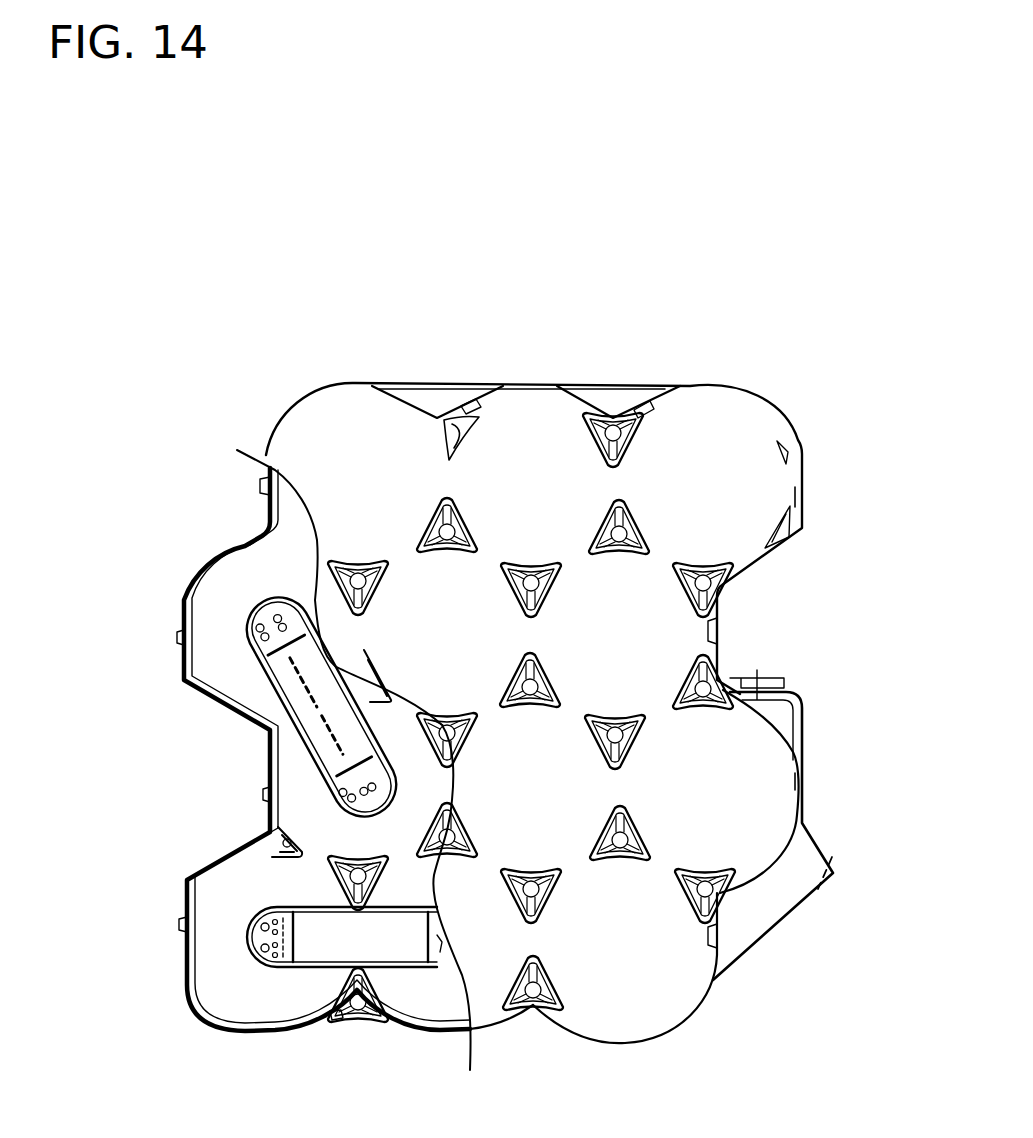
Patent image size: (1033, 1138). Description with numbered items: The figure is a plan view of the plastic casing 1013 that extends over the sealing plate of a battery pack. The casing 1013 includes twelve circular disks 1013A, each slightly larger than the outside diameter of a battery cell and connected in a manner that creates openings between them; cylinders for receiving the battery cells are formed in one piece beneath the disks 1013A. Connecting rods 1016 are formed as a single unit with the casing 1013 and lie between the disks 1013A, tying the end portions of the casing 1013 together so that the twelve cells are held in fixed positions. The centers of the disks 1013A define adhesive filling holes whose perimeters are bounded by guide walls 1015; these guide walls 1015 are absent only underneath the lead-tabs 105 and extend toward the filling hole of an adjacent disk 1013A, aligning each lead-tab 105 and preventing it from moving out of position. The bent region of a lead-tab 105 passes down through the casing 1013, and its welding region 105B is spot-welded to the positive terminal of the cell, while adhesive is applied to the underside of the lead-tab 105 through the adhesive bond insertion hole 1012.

The lead-tab 105 is at (262, 724).
The welding region 105B is at (340, 812).
The adhesive bond insertion hole 1012 is at (276, 650).
The casing 1013 is at (783, 373).
The disks 1013A is at (214, 662).
The guide walls 1015 is at (266, 603).
The connecting rods 1016 is at (445, 527).